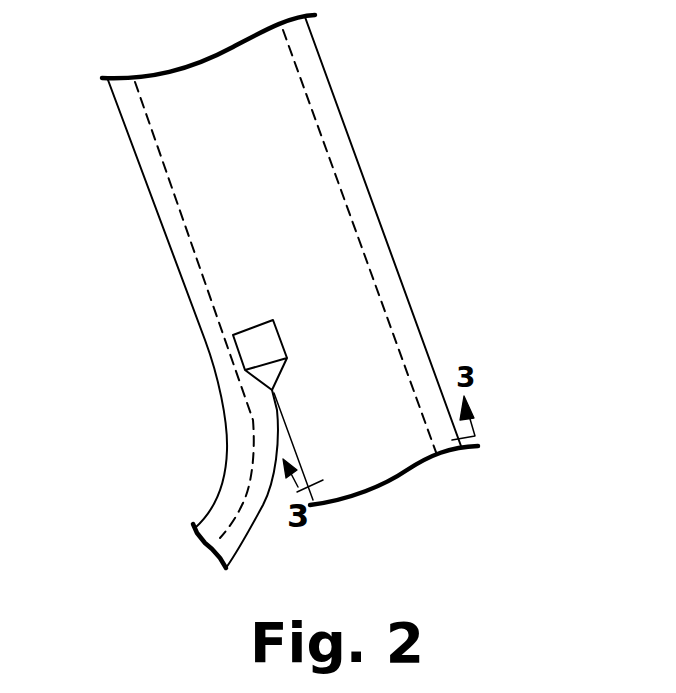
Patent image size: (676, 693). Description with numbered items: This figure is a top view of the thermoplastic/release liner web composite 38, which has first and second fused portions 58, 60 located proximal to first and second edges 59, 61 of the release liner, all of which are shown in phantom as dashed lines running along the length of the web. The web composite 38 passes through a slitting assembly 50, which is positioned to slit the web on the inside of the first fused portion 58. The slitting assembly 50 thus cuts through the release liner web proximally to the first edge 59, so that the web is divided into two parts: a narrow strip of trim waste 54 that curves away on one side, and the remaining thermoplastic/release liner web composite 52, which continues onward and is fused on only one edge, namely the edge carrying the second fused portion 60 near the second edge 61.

The thermoplastic/release liner web composite 38 is at (272, 146).
The slitting assembly 50 is at (273, 338).
The thermoplastic/release liner web composite 52 is at (405, 403).
The trim waste 54 is at (220, 516).
The first fused portion 58 is at (185, 265).
The first edge 59 is at (164, 160).
The second fused portion 60 is at (368, 213).
The second edge 61 is at (333, 168).